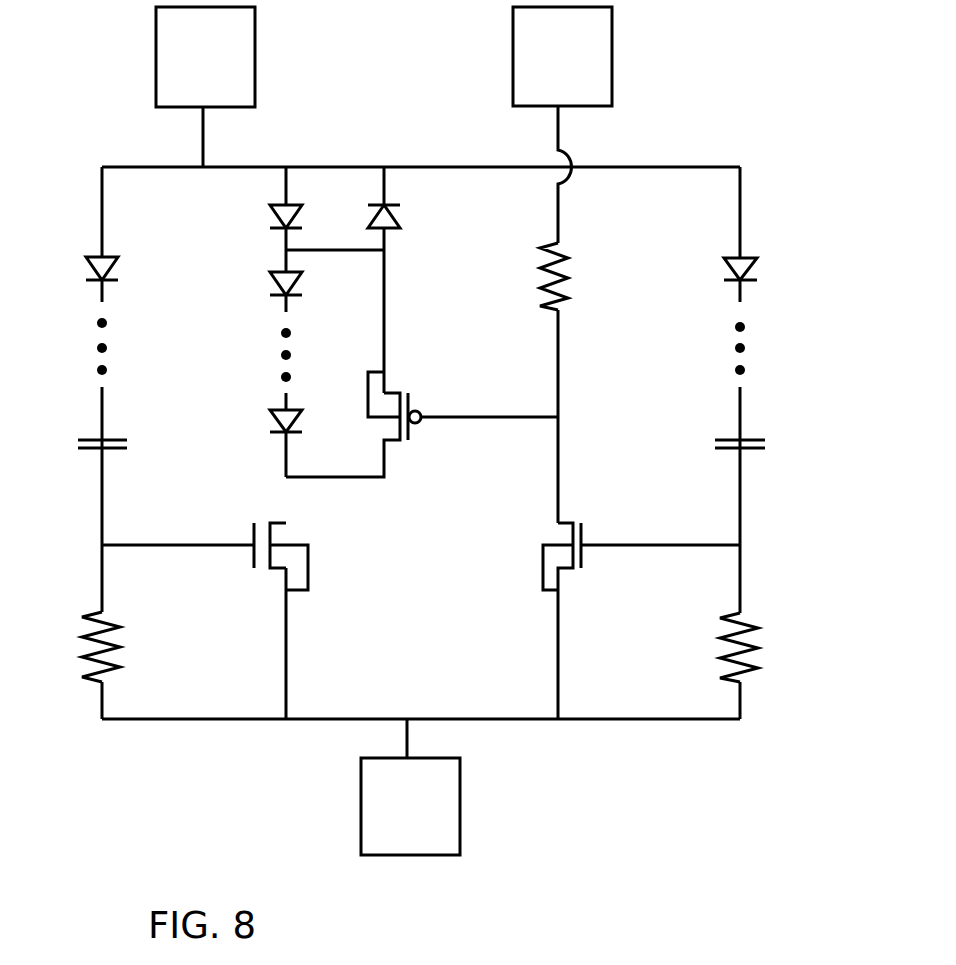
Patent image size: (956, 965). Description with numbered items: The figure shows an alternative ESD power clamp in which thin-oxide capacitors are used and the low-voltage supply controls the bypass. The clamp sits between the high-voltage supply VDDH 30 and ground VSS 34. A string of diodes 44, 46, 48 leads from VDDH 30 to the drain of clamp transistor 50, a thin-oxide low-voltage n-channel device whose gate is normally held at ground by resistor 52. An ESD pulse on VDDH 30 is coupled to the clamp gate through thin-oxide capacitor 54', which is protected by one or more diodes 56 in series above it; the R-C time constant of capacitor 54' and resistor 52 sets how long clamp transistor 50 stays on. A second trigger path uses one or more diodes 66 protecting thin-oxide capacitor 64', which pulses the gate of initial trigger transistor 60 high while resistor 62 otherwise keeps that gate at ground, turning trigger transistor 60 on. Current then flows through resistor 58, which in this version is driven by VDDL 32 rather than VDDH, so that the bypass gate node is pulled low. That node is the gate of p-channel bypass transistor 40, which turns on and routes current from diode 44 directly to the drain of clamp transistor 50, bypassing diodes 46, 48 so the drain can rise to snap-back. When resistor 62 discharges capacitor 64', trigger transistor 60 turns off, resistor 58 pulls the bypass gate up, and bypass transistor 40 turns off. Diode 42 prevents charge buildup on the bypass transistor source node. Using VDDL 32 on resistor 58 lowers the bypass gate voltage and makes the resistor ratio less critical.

The VDDH 30 is at (255, 70).
The VDDL 32 is at (612, 70).
The VSS 34 is at (460, 822).
The p-channel bypass transistor 40 is at (408, 440).
The diode 42 is at (400, 214).
The diode 44 is at (270, 216).
The diode 46 is at (270, 284).
The diode 48 is at (270, 422).
The clamp transistor 50 is at (270, 514).
The resistor 52 is at (120, 645).
The thin-oxide capacitor 54' is at (125, 461).
The diode 56 is at (86, 268).
The resistor 58 is at (568, 278).
The initial trigger transistor 60 is at (581, 568).
The resistor 62 is at (758, 645).
The thin-oxide capacitor 64' is at (762, 461).
The diode 66 is at (724, 270).